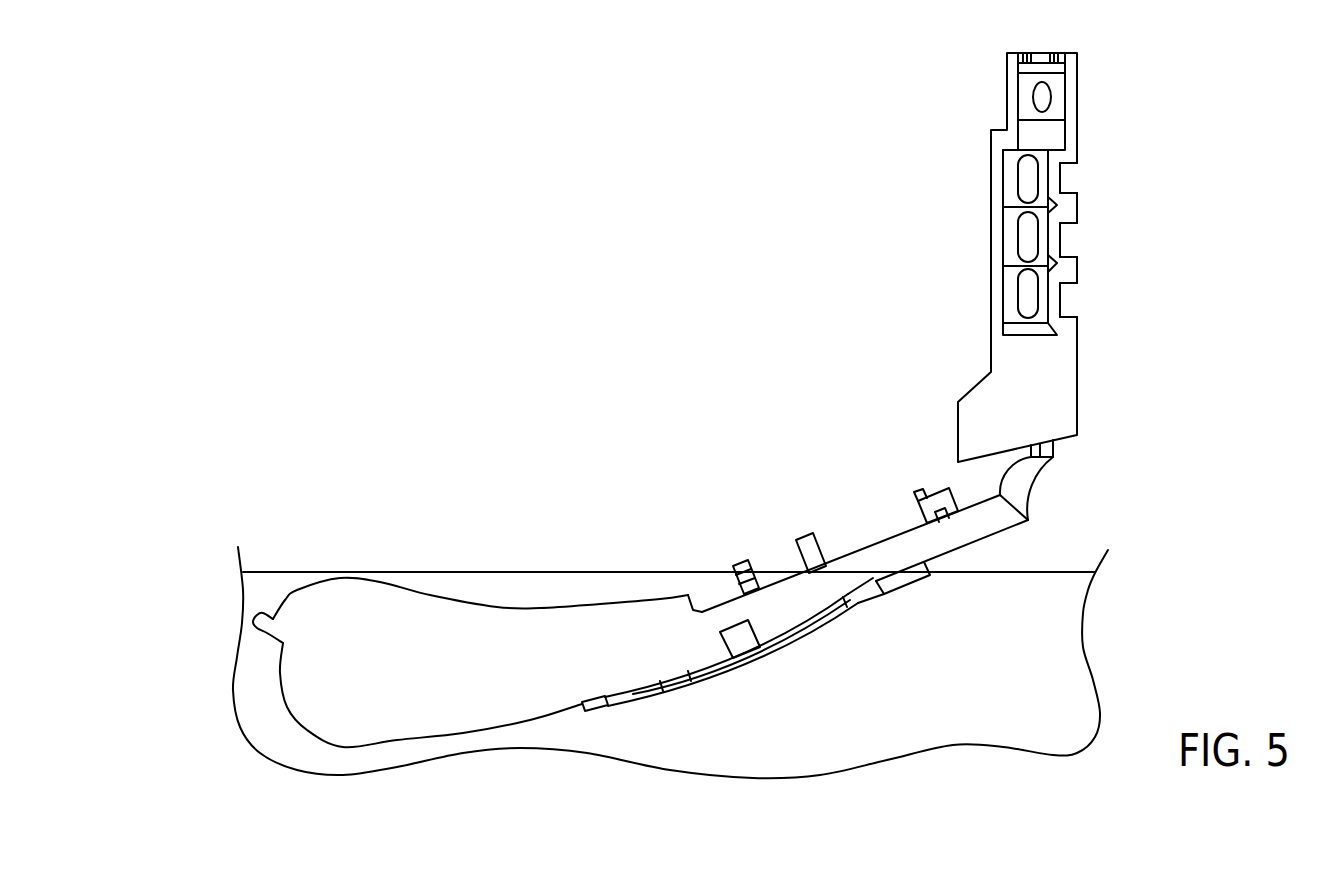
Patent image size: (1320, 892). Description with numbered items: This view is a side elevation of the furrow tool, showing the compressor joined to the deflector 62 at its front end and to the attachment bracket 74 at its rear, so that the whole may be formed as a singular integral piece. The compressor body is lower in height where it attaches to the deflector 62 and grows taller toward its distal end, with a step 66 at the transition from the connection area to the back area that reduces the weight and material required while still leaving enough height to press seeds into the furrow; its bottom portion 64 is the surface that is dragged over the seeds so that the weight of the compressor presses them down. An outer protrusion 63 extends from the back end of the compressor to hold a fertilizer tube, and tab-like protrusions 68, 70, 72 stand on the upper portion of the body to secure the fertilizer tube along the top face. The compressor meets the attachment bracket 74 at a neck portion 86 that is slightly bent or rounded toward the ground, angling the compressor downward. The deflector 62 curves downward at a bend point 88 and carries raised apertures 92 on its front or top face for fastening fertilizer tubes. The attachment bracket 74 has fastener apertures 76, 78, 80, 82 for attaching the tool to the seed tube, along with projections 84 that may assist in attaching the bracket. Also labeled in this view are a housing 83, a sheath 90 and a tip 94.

The deflector 62 is at (995, 528).
The outer protrusion 63 is at (256, 612).
The bottom portion 64 is at (470, 733).
The step 66 is at (686, 594).
The protrusion 68 is at (739, 563).
The protrusion 70 is at (806, 540).
The protrusion 72 is at (921, 496).
The attachment bracket 74 is at (1010, 257).
The fastener aperture 76 is at (1036, 97).
The fastener aperture 78 is at (1030, 180).
The fastener aperture 80 is at (1030, 235).
The fastener aperture 82 is at (1030, 291).
The housing 83 is at (1053, 387).
The projection 84 is at (1077, 207).
The neck portion 86 is at (1036, 472).
The bend point 88 is at (868, 597).
The sheath 90 is at (697, 682).
The aperture 92 is at (742, 637).
The tip 94 is at (595, 708).